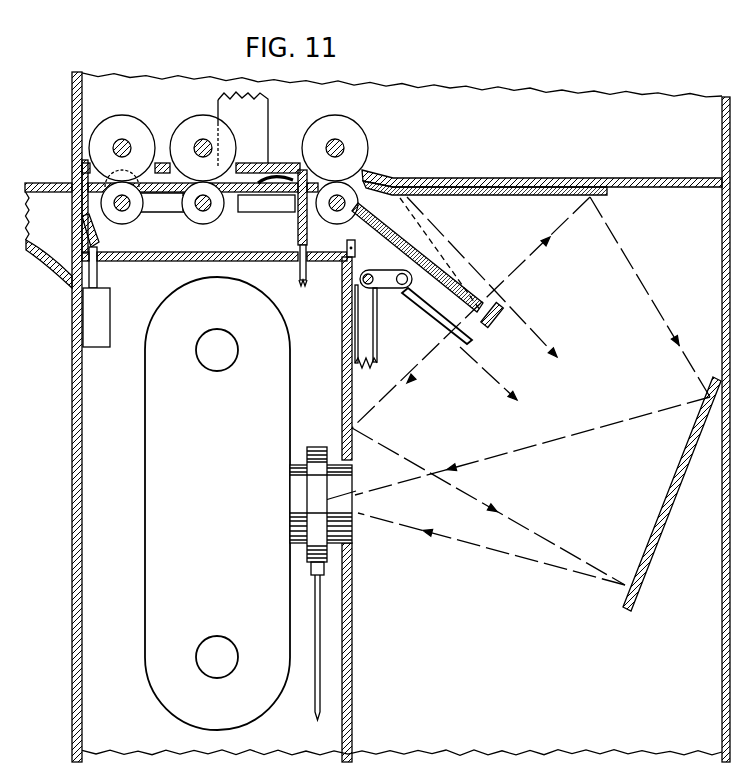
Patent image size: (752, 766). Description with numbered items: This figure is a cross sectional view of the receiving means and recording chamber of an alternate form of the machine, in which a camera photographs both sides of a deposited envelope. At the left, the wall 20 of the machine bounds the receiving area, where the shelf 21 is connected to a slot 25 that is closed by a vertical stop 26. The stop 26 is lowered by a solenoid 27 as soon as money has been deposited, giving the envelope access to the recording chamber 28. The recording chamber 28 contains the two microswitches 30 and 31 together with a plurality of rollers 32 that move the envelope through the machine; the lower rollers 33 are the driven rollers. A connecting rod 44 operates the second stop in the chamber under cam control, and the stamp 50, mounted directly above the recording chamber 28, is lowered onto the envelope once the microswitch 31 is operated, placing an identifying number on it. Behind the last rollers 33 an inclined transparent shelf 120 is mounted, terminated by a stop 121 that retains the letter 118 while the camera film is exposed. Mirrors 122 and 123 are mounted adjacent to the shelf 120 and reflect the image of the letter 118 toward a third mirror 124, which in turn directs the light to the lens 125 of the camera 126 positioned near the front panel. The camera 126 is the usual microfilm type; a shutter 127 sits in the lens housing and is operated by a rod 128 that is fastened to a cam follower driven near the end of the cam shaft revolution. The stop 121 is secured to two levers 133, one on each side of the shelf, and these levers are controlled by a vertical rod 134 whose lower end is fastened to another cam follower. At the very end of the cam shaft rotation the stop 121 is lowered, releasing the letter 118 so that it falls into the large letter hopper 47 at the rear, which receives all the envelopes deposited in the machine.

The side wall 20 is at (73, 113).
The shelf 21 is at (48, 183).
The slot 25 is at (72, 176).
The vertical stop 26 is at (82, 233).
The solenoid 27 is at (102, 310).
The recording chamber 28 is at (160, 182).
The microswitch 30 is at (157, 210).
The microswitch 31 is at (258, 207).
The rollers 32 is at (392, 157).
The lower rollers 33 is at (122, 224).
The connecting rod 44 is at (306, 281).
The letter hopper 47 is at (560, 741).
The stamp 50 is at (262, 128).
The letter 118 is at (463, 292).
The inclined transparent shelf 120 is at (393, 237).
The stop 121 is at (492, 320).
The mirror 122 is at (513, 195).
The mirror 123 is at (352, 391).
The third mirror 124 is at (662, 526).
The lens 125 is at (352, 528).
The camera 126 is at (150, 570).
The shutter 127 is at (317, 450).
The rod 128 is at (315, 620).
The levers 133 is at (443, 312).
The vertical rod 134 is at (372, 322).